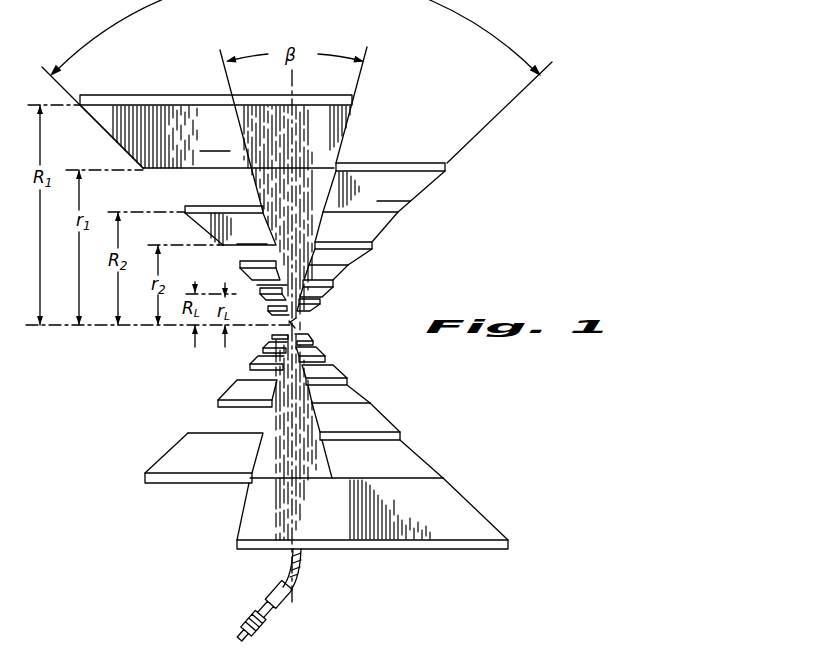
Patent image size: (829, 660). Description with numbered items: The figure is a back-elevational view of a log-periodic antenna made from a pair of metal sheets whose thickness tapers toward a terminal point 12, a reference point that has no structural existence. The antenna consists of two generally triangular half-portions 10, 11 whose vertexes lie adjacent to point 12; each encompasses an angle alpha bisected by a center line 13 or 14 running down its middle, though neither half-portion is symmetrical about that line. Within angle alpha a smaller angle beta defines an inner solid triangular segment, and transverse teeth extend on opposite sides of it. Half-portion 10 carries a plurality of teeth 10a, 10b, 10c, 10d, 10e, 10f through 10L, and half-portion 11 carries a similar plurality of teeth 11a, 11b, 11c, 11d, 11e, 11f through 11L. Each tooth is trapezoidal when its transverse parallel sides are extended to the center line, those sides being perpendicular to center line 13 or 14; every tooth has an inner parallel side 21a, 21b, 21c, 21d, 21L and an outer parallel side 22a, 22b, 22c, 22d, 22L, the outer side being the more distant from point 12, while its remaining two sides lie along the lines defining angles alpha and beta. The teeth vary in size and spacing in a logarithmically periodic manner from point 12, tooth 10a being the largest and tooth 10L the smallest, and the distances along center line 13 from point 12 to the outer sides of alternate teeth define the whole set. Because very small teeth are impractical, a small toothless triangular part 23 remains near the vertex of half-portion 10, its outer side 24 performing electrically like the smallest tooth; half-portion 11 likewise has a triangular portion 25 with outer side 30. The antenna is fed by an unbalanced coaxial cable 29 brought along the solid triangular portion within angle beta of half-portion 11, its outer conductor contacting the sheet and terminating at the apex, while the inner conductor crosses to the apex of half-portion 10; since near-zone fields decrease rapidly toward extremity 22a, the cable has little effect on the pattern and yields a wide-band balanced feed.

The half-portion 10 is at (386, 105).
The half-portion 11 is at (408, 566).
The terminal point 12 is at (290, 323).
The center line 13 is at (292, 131).
The center line 14 is at (296, 528).
The triangular part 23 is at (313, 305).
The outer side 24 is at (314, 298).
The triangular portion 25 is at (289, 332).
The coaxial cable 29 is at (282, 570).
The outer side 30 is at (273, 356).
The tooth 10a is at (231, 218).
The tooth 10b is at (366, 191).
The tooth 10c is at (243, 229).
The tooth 10d is at (331, 257).
The tooth 10e is at (264, 277).
The tooth 10f is at (328, 286).
The tooth 10L is at (257, 288).
The tooth 11a is at (347, 437).
The tooth 11b is at (225, 453).
The tooth 11c is at (377, 440).
The tooth 11d is at (247, 393).
The tooth 11e is at (336, 382).
The tooth 11f is at (262, 369).
The tooth 11L is at (326, 351).
The parallel side 21a is at (175, 169).
The parallel side 21b is at (394, 214).
The parallel side 21c is at (221, 244).
The parallel side 21d is at (346, 266).
The parallel side 21L is at (281, 297).
The outer side 22a is at (188, 96).
The outer side 22b is at (388, 164).
The outer side 22c is at (230, 206).
The outer side 22d is at (336, 242).
The outer side 22L is at (258, 279).